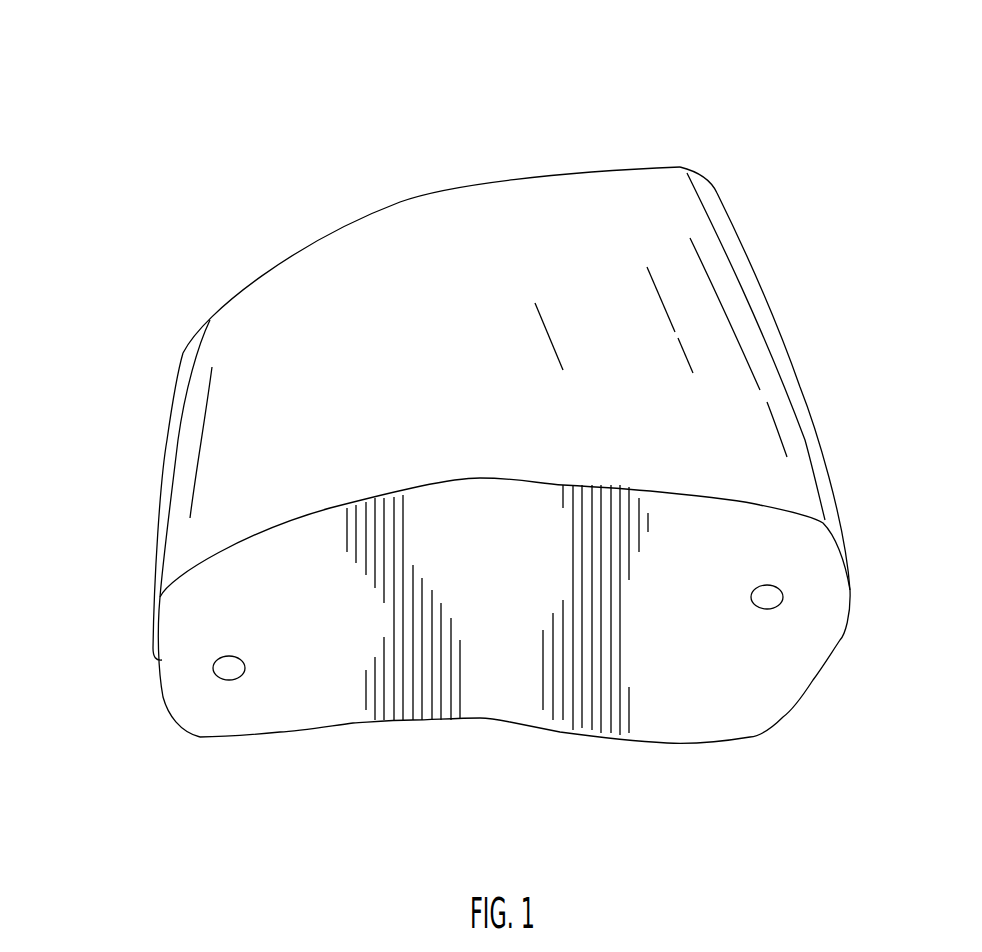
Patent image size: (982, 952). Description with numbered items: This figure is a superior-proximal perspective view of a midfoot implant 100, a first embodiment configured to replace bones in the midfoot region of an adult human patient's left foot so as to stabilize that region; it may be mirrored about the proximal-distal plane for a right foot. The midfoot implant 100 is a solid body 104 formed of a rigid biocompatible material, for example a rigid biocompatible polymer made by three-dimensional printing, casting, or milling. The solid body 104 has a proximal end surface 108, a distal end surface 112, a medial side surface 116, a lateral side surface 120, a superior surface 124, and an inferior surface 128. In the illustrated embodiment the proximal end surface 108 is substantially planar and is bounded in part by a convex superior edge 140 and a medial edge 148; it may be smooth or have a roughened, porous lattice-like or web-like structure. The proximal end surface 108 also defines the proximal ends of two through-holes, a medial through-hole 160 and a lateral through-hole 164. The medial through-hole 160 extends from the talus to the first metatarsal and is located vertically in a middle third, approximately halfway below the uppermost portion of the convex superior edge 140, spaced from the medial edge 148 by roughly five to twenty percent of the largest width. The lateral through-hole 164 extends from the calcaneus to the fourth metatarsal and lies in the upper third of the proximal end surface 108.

The midfoot implant 100 is at (190, 135).
The solid body 104 is at (328, 270).
The proximal end surface 108 is at (727, 697).
The distal end surface 112 is at (441, 172).
The medial side surface 116 is at (152, 487).
The lateral side surface 120 is at (806, 373).
The superior surface 124 is at (597, 258).
The inferior surface 128 is at (365, 734).
The convex superior edge 140 is at (632, 488).
The medial edge 148 is at (512, 723).
The medial through-hole 160 is at (229, 672).
The lateral through-hole 164 is at (767, 602).